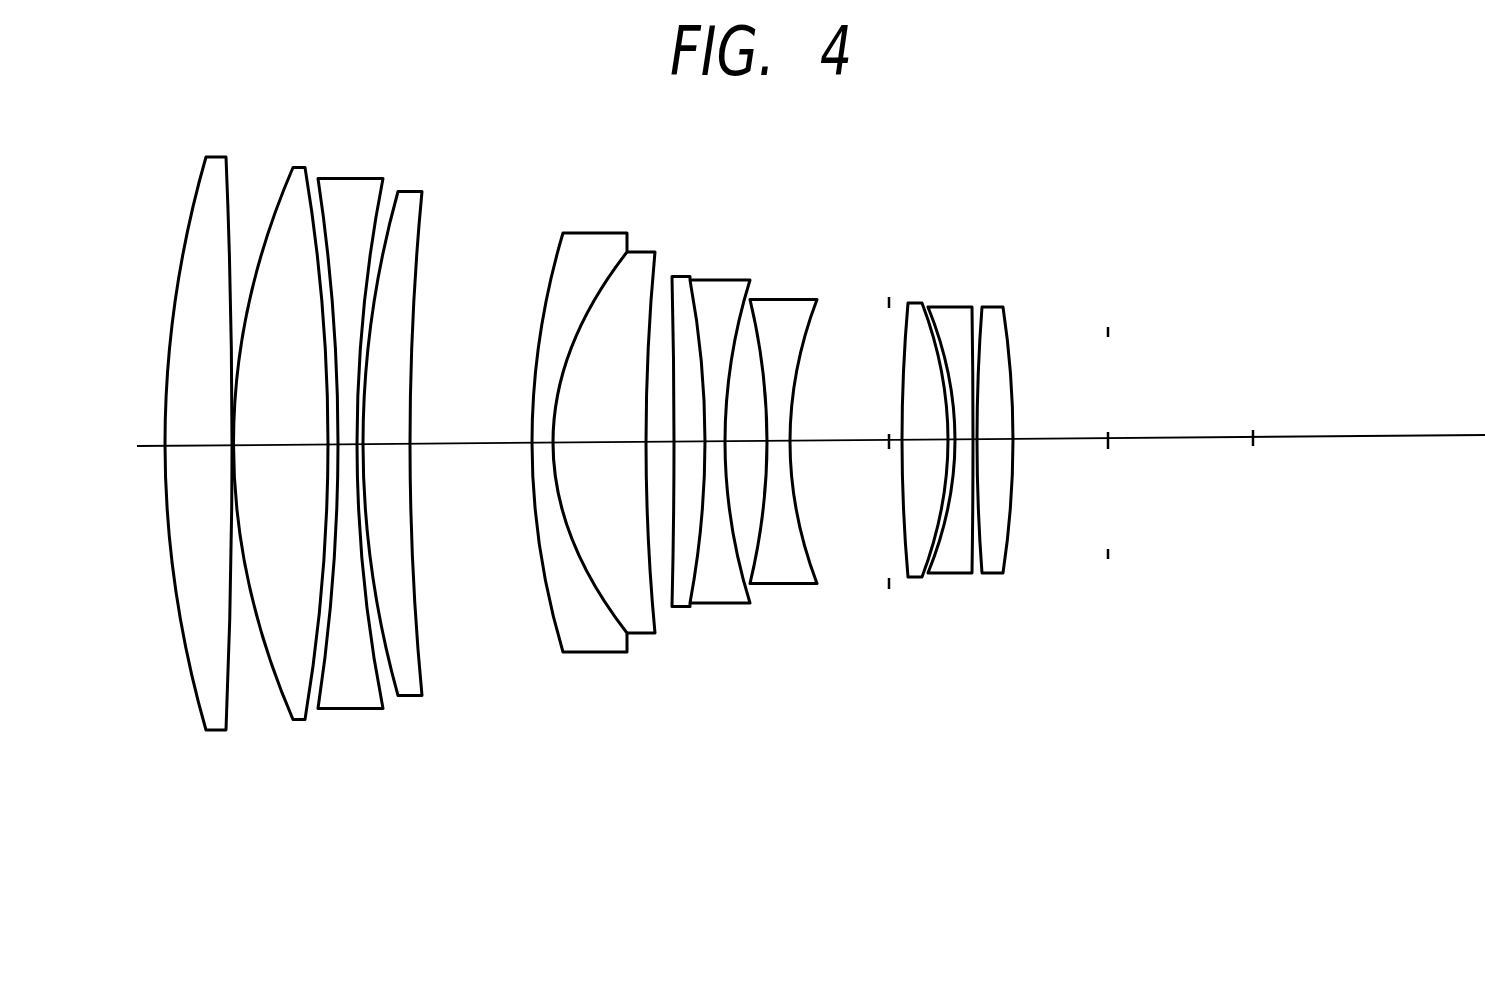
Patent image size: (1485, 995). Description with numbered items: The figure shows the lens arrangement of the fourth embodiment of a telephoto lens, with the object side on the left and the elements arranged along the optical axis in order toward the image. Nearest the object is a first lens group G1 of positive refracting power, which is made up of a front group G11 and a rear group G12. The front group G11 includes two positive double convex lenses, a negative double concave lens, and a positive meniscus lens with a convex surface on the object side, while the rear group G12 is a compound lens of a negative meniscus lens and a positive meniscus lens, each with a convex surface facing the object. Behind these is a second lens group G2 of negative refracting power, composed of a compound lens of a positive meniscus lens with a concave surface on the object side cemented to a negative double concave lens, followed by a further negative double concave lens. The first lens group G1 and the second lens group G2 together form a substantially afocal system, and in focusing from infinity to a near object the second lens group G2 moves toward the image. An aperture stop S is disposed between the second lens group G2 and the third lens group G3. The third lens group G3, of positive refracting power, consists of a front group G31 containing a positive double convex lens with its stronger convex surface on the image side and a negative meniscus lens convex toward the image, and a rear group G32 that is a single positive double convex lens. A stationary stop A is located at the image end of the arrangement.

The first lens group G1 is at (420, 499).
The front group of the first lens group G11 is at (442, 727).
The rear group of the first lens group G12 is at (672, 650).
The second lens group G2 is at (827, 607).
The third lens group G3 is at (969, 492).
The front group of the third lens group G31 is at (977, 577).
The rear group of the third lens group G32 is at (1015, 577).
The aperture stop S is at (886, 423).
The stationary stop A is at (1107, 425).